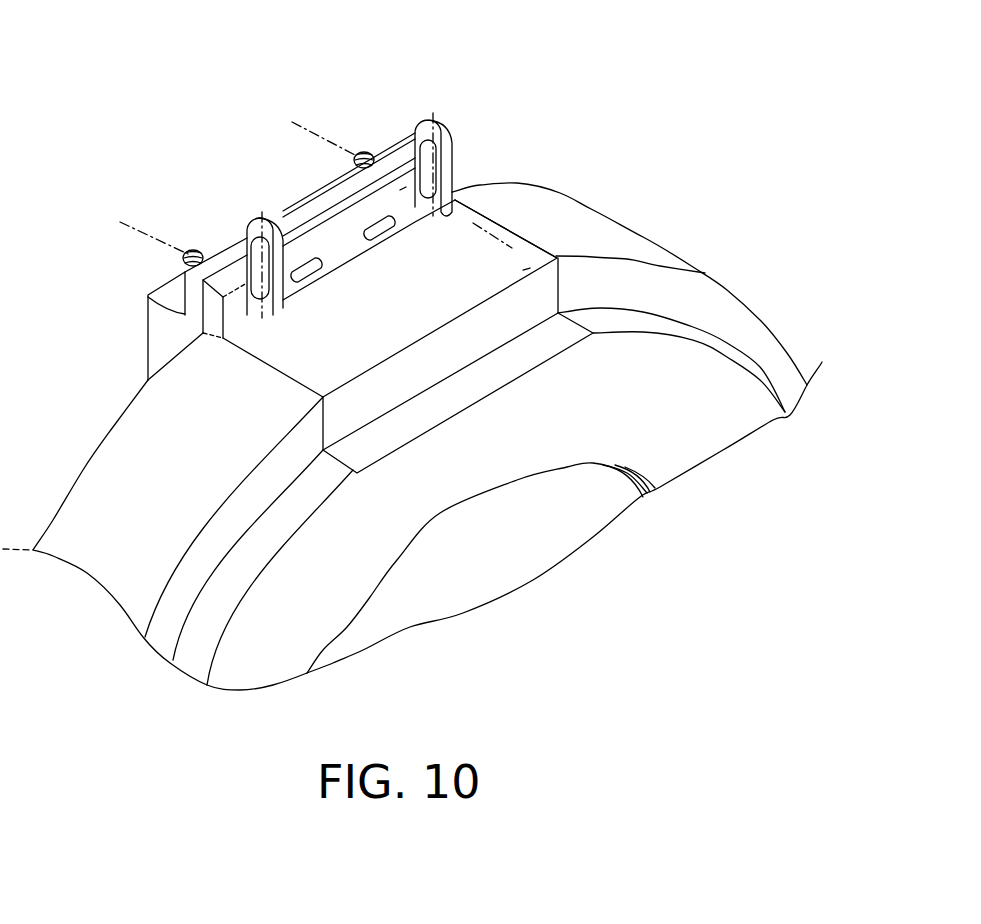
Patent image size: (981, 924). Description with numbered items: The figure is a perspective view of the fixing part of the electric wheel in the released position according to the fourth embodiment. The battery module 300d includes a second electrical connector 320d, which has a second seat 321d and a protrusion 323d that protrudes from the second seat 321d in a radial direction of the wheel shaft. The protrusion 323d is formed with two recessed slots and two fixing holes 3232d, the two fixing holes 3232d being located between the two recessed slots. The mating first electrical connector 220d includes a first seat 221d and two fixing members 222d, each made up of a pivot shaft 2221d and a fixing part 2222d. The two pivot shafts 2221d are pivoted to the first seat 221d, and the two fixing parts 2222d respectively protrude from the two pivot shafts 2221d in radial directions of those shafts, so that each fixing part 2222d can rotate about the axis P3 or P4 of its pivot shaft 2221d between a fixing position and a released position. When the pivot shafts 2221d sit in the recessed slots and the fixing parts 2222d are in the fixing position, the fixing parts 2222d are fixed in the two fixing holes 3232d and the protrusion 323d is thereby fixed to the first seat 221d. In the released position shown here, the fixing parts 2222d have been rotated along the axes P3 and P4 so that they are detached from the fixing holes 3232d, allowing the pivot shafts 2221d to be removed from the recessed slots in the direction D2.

The battery module 300d is at (716, 459).
The second electrical connector 320d is at (530, 239).
The second seat 321d is at (523, 270).
The fixing holes 3232d is at (380, 228).
The protrusion 323d is at (403, 189).
The first electrical connector 220d is at (126, 253).
The first seat 221d is at (160, 297).
The fixing members 222d is at (441, 323).
The pivot shafts 2221d is at (226, 284).
The fixing parts 2222d is at (484, 331).
The axis P3 is at (133, 223).
The axis P4 is at (305, 124).
The direction D2 is at (587, 141).